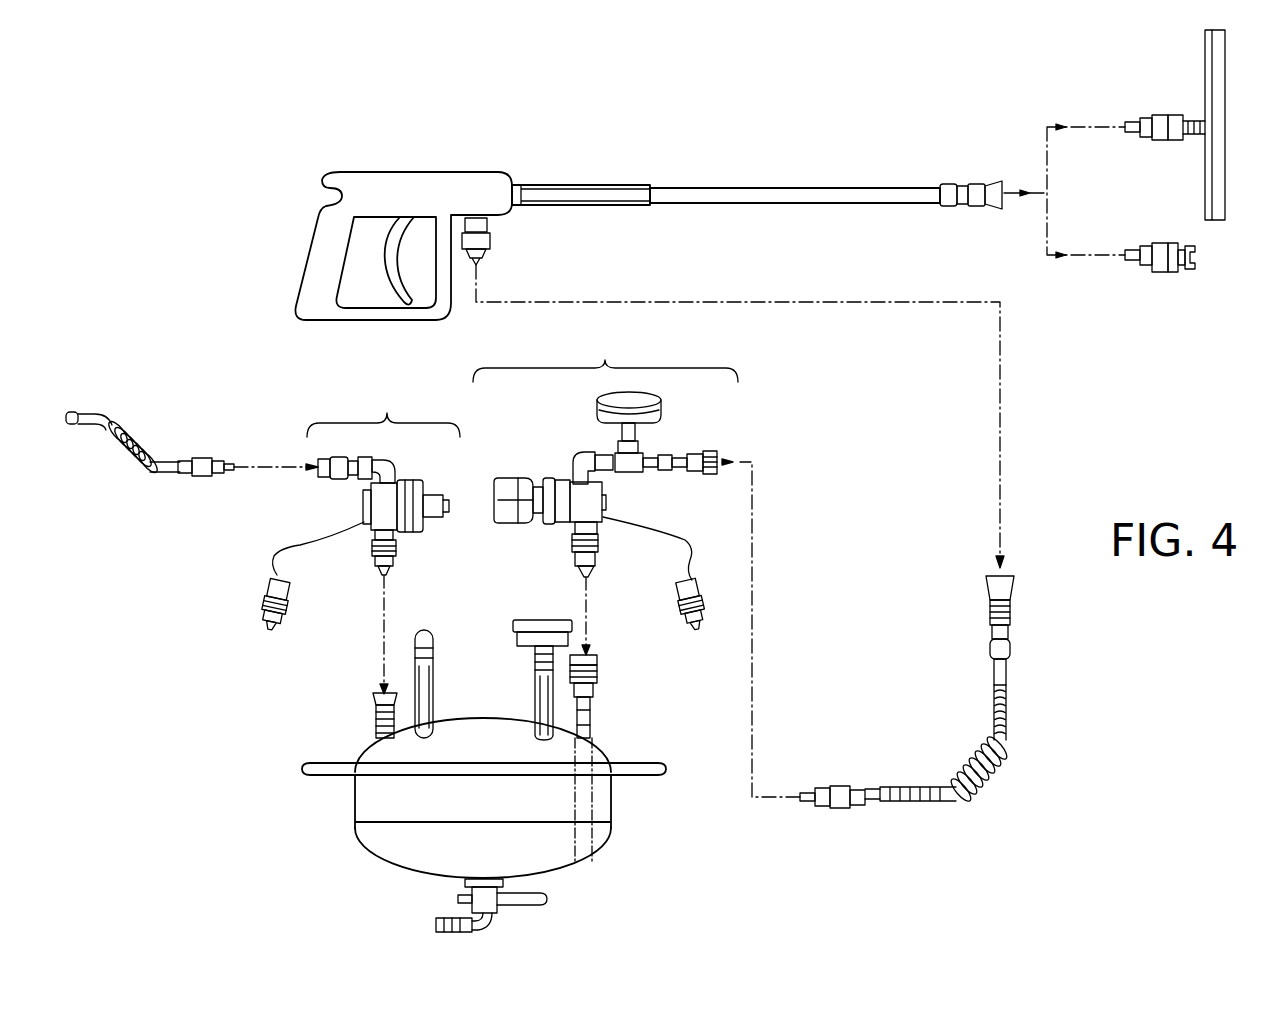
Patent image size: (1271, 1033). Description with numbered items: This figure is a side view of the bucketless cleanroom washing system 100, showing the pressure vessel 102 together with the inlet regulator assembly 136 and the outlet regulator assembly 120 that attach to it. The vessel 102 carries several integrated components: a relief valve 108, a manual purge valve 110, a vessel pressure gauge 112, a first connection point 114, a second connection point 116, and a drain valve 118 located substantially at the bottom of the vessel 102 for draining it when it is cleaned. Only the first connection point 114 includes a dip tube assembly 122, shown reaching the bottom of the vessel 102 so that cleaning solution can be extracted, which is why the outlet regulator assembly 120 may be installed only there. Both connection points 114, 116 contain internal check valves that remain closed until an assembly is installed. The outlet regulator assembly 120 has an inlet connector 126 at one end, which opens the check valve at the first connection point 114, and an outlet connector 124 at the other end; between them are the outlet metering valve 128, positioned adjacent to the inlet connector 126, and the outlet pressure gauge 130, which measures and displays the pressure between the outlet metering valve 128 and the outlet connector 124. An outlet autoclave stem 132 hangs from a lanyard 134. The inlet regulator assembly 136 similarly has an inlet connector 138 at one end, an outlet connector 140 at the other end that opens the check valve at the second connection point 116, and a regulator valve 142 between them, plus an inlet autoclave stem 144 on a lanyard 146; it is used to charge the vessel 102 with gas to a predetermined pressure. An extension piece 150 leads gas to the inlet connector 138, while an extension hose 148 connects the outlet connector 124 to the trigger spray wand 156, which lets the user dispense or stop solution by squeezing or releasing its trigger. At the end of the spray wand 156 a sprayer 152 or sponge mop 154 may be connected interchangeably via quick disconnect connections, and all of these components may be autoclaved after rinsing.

The bucketless cleanroom washing system 100 is at (752, 866).
The vessel 102 is at (355, 814).
The relief valve 108 is at (434, 640).
The manual purge valve 110 is at (535, 692).
The vessel pressure gauge 112 is at (550, 620).
The first connection point 114 is at (598, 668).
The second connection point 116 is at (372, 708).
The drain valve 118 is at (500, 913).
The outlet regulator assembly 120 is at (628, 352).
The dip tube assembly 122 is at (600, 806).
The outlet connector 124 is at (705, 451).
The inlet connector 126 is at (598, 550).
The outlet metering valve 128 is at (528, 478).
The outlet pressure gauge 130 is at (600, 405).
The outlet autoclave stem 132 is at (680, 600).
The lanyard 134 is at (660, 538).
The inlet regulator assembly 136 is at (406, 410).
The inlet connector 138 is at (338, 479).
The outlet connector 140 is at (398, 558).
The regulator valve 142 is at (407, 481).
The inlet autoclave stem 144 is at (284, 617).
The lanyard 146 is at (302, 546).
The extension hose 148 is at (958, 765).
The extension piece 150 is at (148, 432).
The sprayer 152 is at (1168, 272).
The sponge mop 154 is at (1170, 140).
The spray wand 156 is at (354, 172).